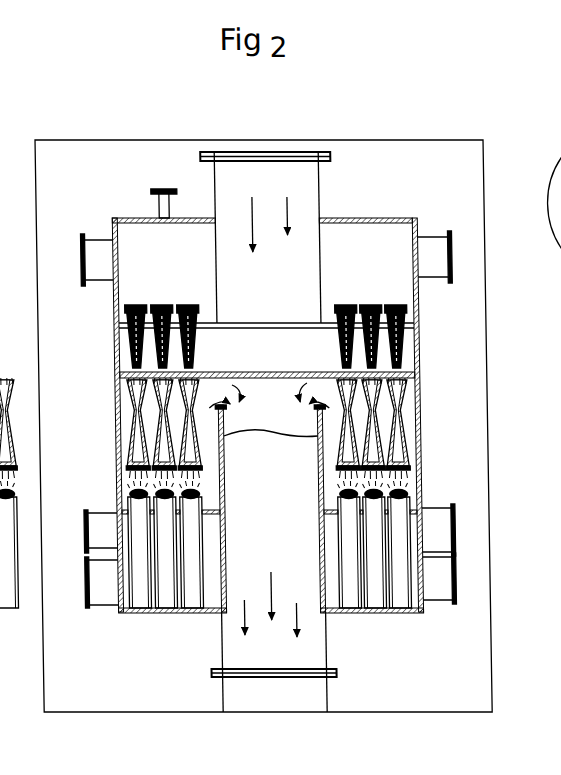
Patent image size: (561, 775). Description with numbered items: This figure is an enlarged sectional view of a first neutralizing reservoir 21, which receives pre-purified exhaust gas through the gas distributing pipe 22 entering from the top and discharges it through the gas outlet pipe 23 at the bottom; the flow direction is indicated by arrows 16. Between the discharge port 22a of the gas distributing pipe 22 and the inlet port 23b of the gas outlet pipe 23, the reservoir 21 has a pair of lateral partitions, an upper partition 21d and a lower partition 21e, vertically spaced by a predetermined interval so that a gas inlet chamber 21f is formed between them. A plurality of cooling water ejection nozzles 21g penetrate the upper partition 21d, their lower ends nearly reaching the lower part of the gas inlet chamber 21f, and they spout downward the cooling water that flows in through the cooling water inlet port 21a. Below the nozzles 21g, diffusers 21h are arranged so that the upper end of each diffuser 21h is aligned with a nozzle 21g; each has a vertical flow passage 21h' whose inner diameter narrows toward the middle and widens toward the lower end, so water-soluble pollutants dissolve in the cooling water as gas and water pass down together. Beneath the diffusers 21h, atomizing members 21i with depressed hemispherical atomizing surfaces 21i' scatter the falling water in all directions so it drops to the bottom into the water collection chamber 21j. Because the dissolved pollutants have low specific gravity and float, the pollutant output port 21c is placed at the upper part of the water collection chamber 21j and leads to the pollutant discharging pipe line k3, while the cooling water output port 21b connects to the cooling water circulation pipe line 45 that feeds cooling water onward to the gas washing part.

The first neutralizing reservoir 21 is at (134, 212).
The gas distributing pipe 22 is at (320, 198).
The discharge port 22a is at (316, 325).
The cooling water inlet port 21a is at (78, 258).
The flow direction 16 is at (78, 260).
The upper partition 21d is at (204, 322).
The gas inlet chamber 21f is at (237, 350).
The cooling water ejection nozzles 21g is at (170, 297).
The diffusers 21h is at (205, 418).
The vertical flow passage 21h' is at (106, 428).
The inlet port 23b is at (272, 413).
The lower partition 21e is at (245, 378).
The atomizing members 21i is at (271, 577).
The atomizing surface 21i' is at (472, 529).
The water collection chamber 21j is at (325, 575).
The gas outlet pipe 23 is at (322, 662).
The pollutant output port 21c is at (77, 538).
The cooling water output port 21b is at (97, 595).
The cooling water circulation pipe line 45 is at (76, 582).
The pollutant discharging pipe line k3 is at (82, 529).